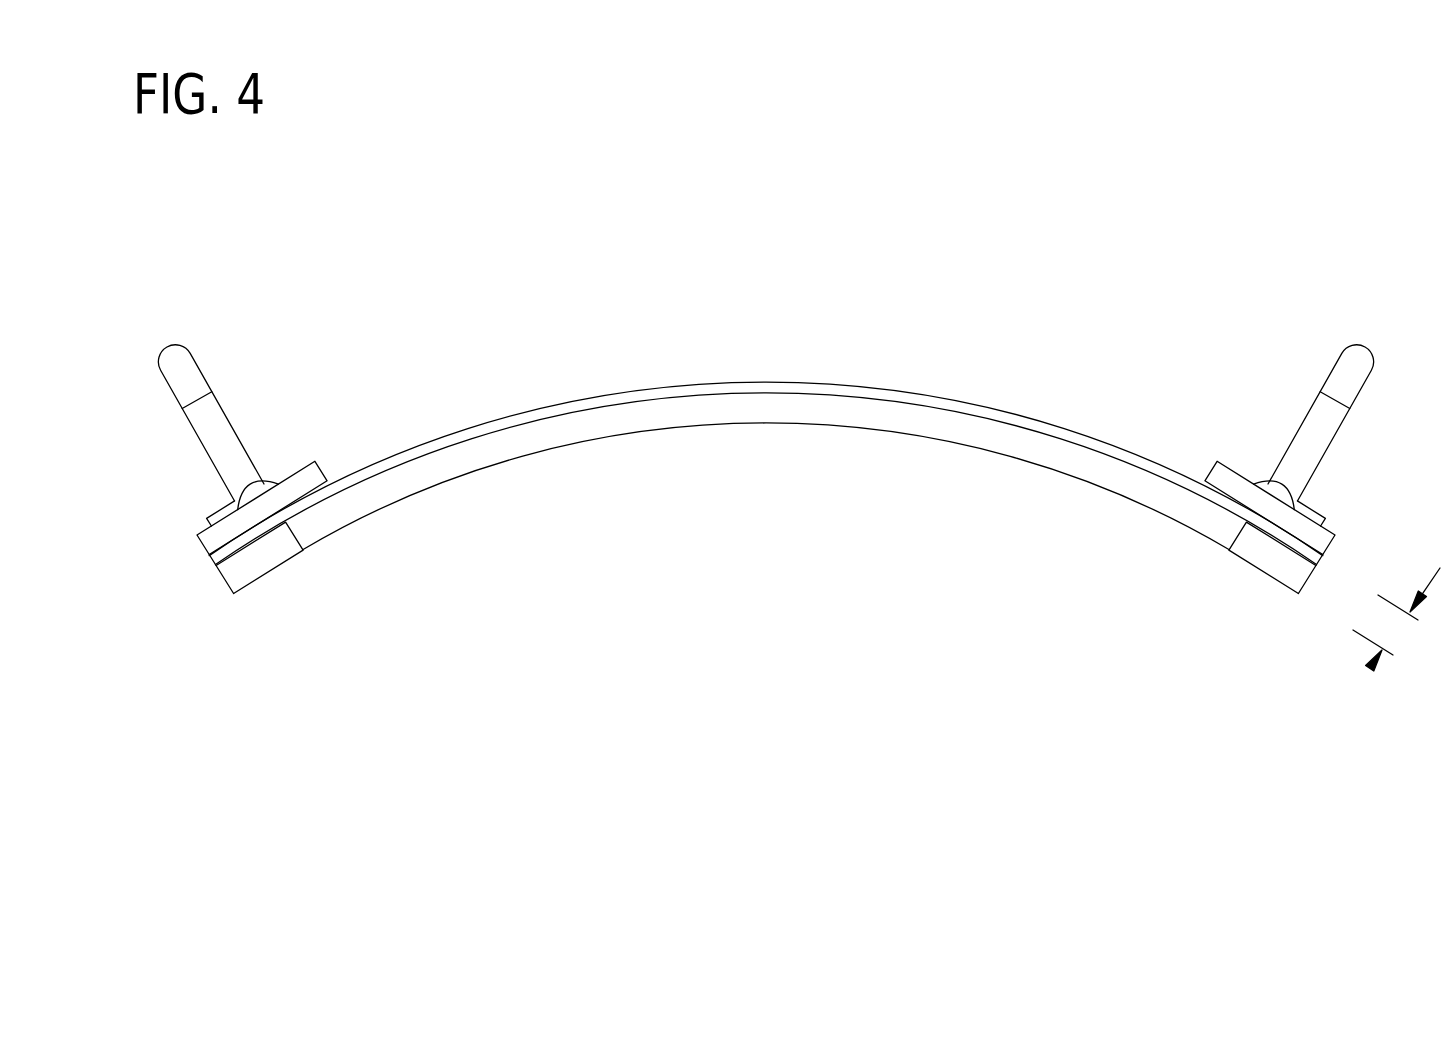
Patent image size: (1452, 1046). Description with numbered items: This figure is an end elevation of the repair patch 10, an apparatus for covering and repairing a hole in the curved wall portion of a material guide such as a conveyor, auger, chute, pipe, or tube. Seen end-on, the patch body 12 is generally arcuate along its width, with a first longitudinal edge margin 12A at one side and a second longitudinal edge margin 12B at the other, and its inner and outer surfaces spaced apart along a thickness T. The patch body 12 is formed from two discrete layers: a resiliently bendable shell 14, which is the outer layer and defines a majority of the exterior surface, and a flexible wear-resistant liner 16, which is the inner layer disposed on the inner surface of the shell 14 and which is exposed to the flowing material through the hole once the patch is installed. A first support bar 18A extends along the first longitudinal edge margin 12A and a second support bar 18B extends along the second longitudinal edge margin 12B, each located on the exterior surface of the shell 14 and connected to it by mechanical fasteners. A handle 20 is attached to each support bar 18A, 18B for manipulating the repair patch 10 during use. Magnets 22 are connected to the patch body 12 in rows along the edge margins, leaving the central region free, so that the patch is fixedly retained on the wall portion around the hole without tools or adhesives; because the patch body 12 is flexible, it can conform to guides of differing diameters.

The repair patch 10 is at (597, 765).
The patch body 12 is at (1005, 383).
The first longitudinal edge margin 12A is at (215, 567).
The second longitudinal edge margin 12B is at (1313, 577).
The shell 14 is at (649, 396).
The liner 16 is at (728, 410).
The first support bar 18A is at (302, 484).
The second support bar 18B is at (1228, 482).
The handle 20 is at (1367, 358).
The magnet 22 is at (257, 560).
The thickness T is at (1370, 668).